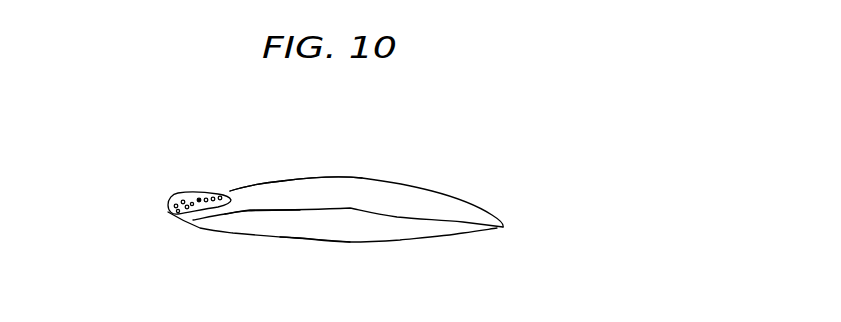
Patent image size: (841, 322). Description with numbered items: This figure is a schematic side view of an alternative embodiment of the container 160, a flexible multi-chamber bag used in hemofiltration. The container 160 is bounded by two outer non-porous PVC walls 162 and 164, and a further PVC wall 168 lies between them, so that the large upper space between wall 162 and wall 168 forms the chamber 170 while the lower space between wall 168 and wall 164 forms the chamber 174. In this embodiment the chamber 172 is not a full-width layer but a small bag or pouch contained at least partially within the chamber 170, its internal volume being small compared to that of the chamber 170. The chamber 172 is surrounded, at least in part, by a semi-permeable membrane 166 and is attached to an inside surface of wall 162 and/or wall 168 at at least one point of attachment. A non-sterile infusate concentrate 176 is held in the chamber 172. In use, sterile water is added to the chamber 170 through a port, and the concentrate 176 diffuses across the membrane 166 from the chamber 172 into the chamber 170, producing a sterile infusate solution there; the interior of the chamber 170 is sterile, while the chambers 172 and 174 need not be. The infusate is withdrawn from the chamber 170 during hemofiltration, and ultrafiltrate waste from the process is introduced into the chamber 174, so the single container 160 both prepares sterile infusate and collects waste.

The container 160 is at (138, 142).
The outer PVC wall 162 is at (467, 197).
The outer PVC wall 164 is at (465, 237).
The semipermeable membrane 166 is at (228, 190).
The PVC wall 168 is at (250, 216).
The chamber 170 is at (297, 178).
The chamber 172 is at (168, 205).
The chamber 174 is at (315, 238).
The non-sterile infusate concentrate 176 is at (199, 198).